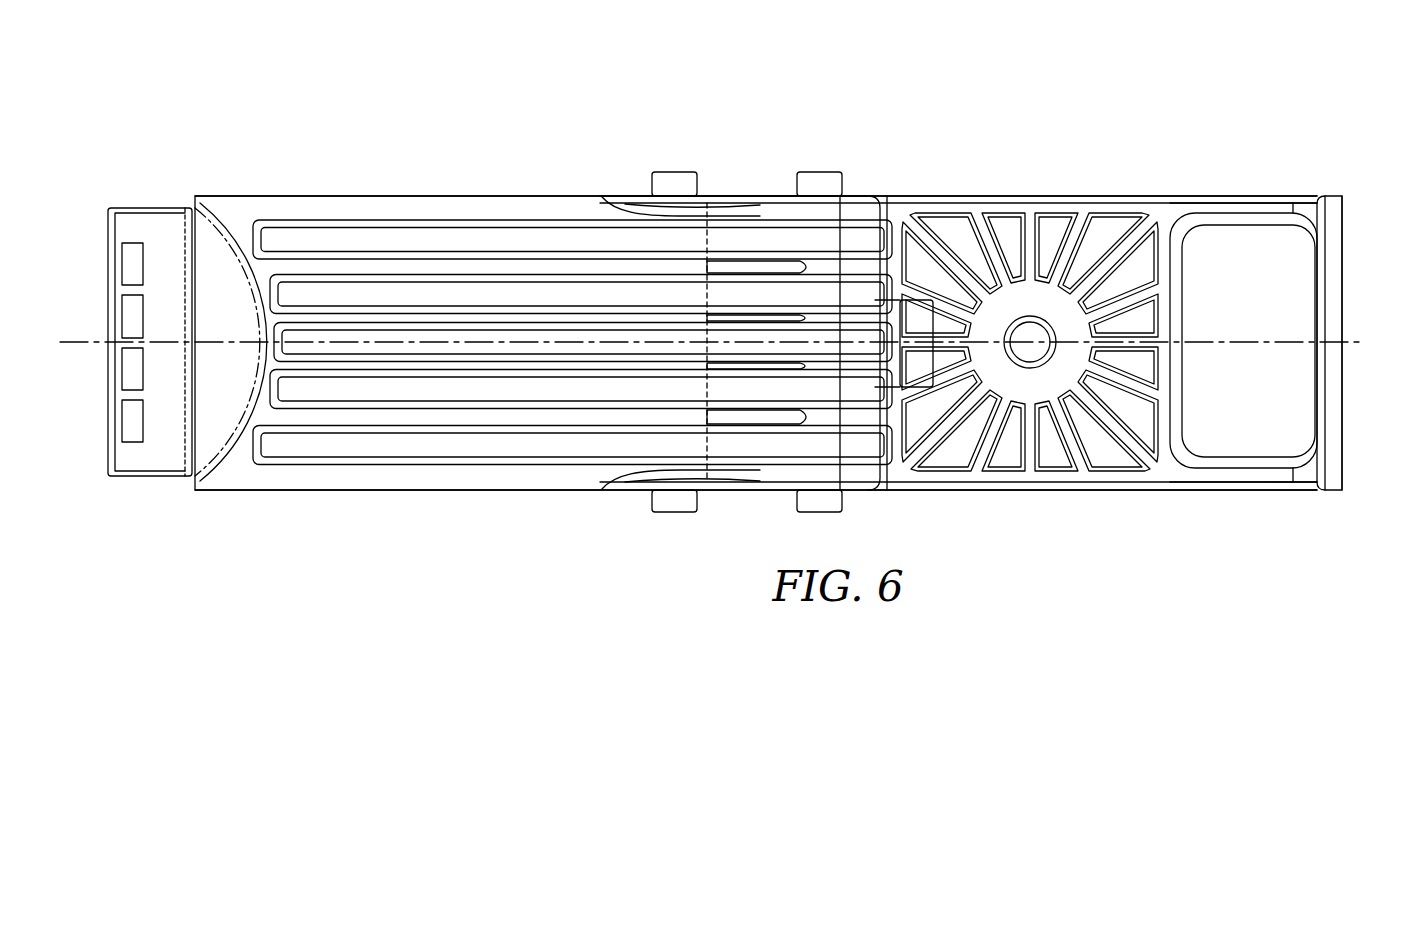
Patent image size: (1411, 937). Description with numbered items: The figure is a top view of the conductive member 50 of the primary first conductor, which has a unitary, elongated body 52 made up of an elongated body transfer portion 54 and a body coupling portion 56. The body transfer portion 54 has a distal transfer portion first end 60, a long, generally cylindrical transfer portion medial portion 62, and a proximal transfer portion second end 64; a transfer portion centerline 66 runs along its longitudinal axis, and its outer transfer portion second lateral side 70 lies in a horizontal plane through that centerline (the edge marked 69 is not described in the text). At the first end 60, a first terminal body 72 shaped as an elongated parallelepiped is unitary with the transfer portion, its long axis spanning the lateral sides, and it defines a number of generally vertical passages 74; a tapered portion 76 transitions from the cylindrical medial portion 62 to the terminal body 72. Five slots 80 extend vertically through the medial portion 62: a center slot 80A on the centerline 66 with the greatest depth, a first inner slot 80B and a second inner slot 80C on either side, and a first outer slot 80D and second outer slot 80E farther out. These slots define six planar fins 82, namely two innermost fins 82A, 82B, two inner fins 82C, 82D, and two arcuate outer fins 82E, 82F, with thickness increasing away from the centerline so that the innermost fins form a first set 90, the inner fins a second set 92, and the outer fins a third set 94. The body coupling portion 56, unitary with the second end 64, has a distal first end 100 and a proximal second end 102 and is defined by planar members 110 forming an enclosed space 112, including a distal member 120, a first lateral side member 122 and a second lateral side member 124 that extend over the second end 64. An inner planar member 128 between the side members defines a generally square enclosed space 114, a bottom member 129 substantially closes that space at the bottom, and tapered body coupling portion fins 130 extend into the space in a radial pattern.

The conductive member 50 is at (792, 137).
The conductive member body 52 is at (490, 196).
The body transfer portion 54 is at (545, 389).
The body coupling portion 56 is at (1016, 391).
The transfer portion first end 60 is at (152, 476).
The transfer portion medial portion 62 is at (452, 490).
The transfer portion second end 64 is at (880, 413).
The transfer portion centerline 66 is at (80, 340).
The bottom edge 69 is at (392, 490).
The transfer portion second lateral side 70 is at (357, 196).
The first terminal body 72 is at (160, 227).
The vertical passages 74 is at (139, 265).
The tapered portion 76 is at (208, 450).
The slots 80 is at (545, 417).
The center slot 80A is at (290, 342).
The first inner slot 80B is at (290, 387).
The second inner slot 80C is at (290, 298).
The first outer slot 80D is at (275, 443).
The second outer slot 80E is at (272, 240).
The fins 82 is at (589, 379).
The innermost fin 82A is at (598, 320).
The innermost fin 82B is at (597, 368).
The inner fin 82C is at (608, 278).
The inner fin 82D is at (530, 425).
The outer fin 82E is at (410, 205).
The outer fin 82F is at (520, 490).
The first set of fins 90 is at (935, 341).
The second set of fins 92 is at (878, 267).
The third set of fins 94 is at (768, 196).
The coupling portion first end 100 is at (1338, 433).
The coupling portion second end 102 is at (897, 490).
The planar members 110 is at (1207, 203).
The enclosed space 112 is at (1255, 247).
The generally square enclosed space 114 is at (1048, 305).
The distal member 120 is at (1338, 228).
The first lateral side member 122 is at (1147, 196).
The second lateral side member 124 is at (1160, 493).
The inner planar member 128 is at (1175, 400).
The bottom member 129 is at (1035, 466).
The body coupling portion fins 130 is at (978, 470).